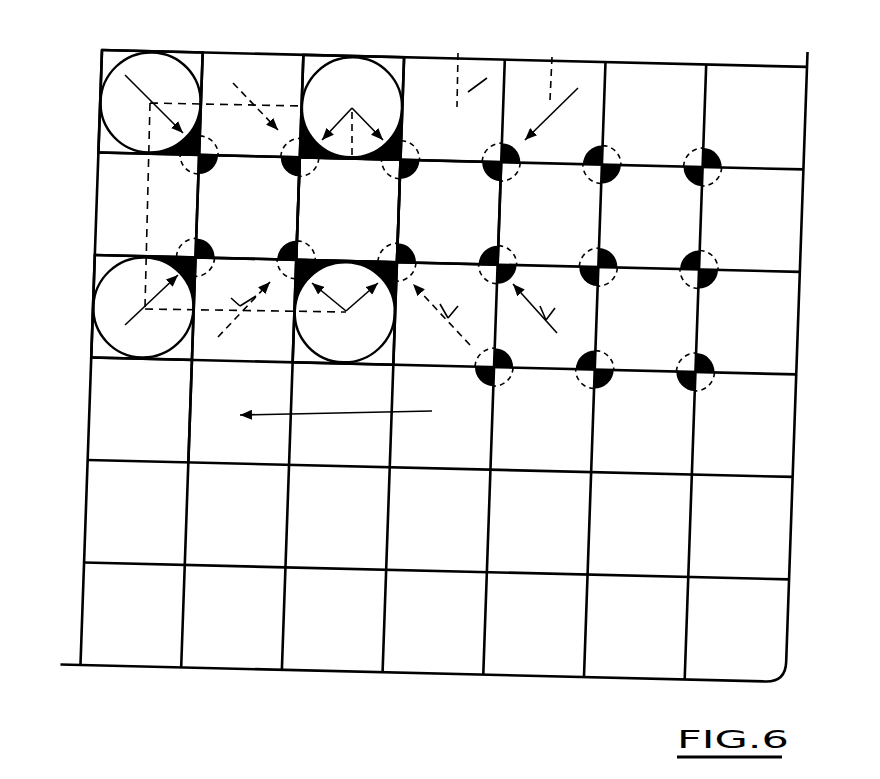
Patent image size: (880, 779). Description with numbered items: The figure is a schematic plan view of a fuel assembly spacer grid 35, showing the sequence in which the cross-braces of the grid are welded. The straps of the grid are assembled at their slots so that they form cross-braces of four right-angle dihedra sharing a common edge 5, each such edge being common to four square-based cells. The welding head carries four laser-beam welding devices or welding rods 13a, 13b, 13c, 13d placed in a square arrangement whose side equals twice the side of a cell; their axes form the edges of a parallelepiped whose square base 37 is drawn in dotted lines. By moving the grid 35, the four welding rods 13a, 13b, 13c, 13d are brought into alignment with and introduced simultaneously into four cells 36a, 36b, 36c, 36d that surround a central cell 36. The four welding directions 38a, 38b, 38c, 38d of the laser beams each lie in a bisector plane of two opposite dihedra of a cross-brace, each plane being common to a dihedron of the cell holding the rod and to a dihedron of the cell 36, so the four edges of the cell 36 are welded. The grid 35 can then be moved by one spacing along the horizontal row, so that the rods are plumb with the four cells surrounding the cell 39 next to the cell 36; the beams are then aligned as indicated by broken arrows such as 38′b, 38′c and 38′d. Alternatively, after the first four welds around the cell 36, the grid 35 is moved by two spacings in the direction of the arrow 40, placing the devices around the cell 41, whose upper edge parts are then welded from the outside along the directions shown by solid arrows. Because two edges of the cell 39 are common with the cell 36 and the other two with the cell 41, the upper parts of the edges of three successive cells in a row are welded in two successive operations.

The grid 35 is at (817, 243).
The welding device 13a is at (176, 52).
The welding device 13b is at (365, 55).
The welding device 13c is at (297, 352).
The welding device 13d is at (100, 347).
The cell 36a is at (115, 52).
The cell 36b is at (313, 57).
The cell 36c is at (279, 365).
The cell 36d is at (94, 340).
The cell 36 is at (257, 227).
The cell 39 is at (351, 173).
The cell 41 is at (455, 227).
The square base 37 is at (150, 195).
The welding direction 38a is at (134, 90).
The welding direction 38b is at (352, 107).
The welding direction 38′b is at (458, 53).
The welding direction 38c is at (346, 311).
The welding direction 38d is at (106, 292).
The welding direction 38′d is at (200, 277).
The welding direction 38′c is at (441, 312).
The common edge 5 is at (188, 363).
The arrow 40 is at (310, 418).